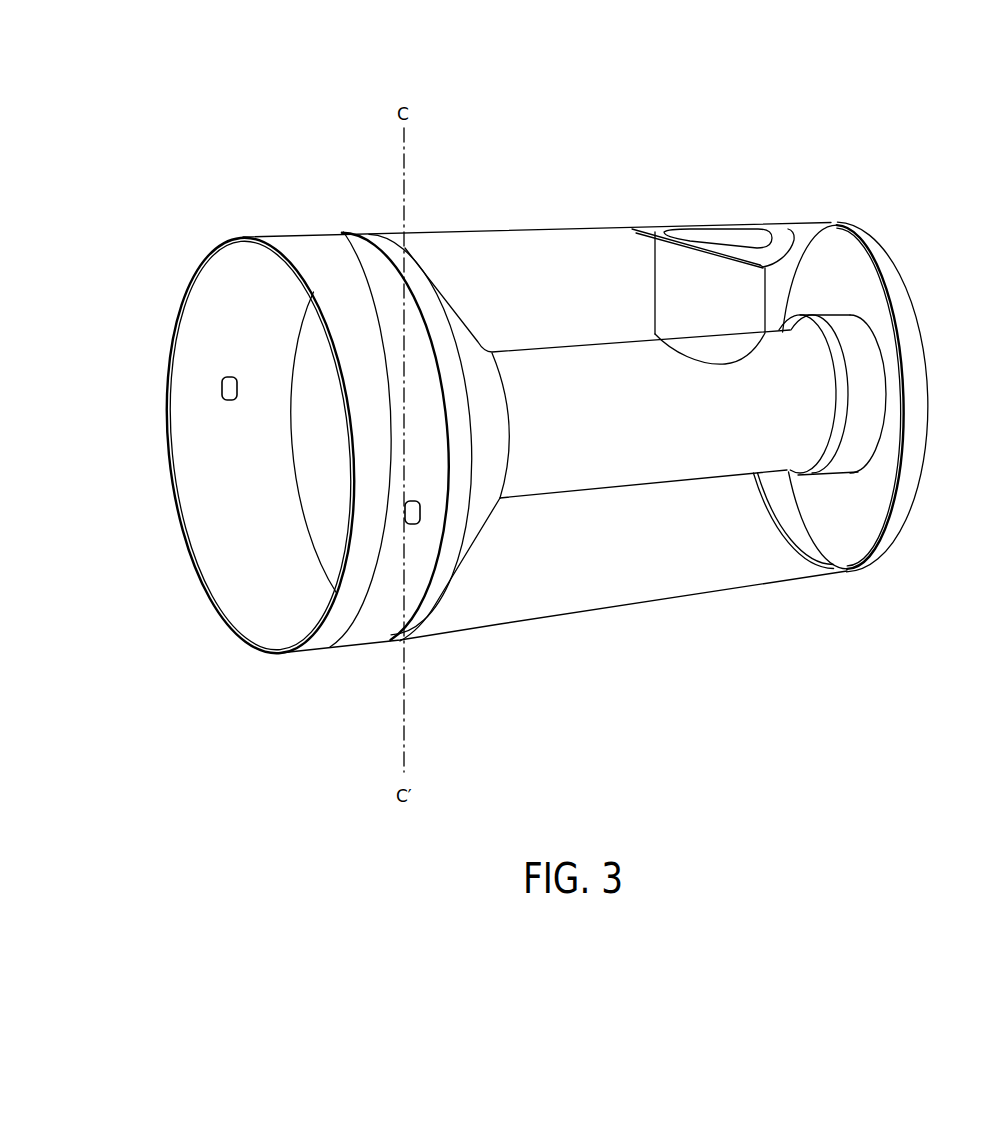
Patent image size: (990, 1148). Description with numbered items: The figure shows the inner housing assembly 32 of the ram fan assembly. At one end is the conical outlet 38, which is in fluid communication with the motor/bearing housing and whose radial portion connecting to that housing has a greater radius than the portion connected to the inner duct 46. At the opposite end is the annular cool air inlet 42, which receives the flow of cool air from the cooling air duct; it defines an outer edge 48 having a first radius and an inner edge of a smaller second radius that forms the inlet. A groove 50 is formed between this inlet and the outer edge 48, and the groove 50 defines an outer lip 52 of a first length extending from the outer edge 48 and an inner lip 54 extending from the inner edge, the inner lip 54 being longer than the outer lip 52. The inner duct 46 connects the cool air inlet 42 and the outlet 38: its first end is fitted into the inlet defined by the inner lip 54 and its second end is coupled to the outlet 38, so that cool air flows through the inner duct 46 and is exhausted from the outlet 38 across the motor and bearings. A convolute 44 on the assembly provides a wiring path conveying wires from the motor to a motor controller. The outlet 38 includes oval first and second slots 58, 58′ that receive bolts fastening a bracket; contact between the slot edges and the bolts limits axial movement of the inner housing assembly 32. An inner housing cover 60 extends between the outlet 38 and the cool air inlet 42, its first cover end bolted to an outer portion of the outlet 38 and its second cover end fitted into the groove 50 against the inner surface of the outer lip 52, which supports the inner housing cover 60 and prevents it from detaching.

The inner housing assembly 32 is at (146, 174).
The outlet 38 is at (290, 246).
The cool air inlet 42 is at (895, 290).
The convolute 44 is at (700, 238).
The inner duct 46 is at (636, 478).
The outer edge 48 is at (902, 518).
The groove 50 is at (806, 487).
The outer lip 52 is at (820, 553).
The inner lip 54 is at (818, 316).
The slot 58 is at (407, 515).
The second slot 58′ is at (222, 391).
The inner housing cover 60 is at (465, 626).